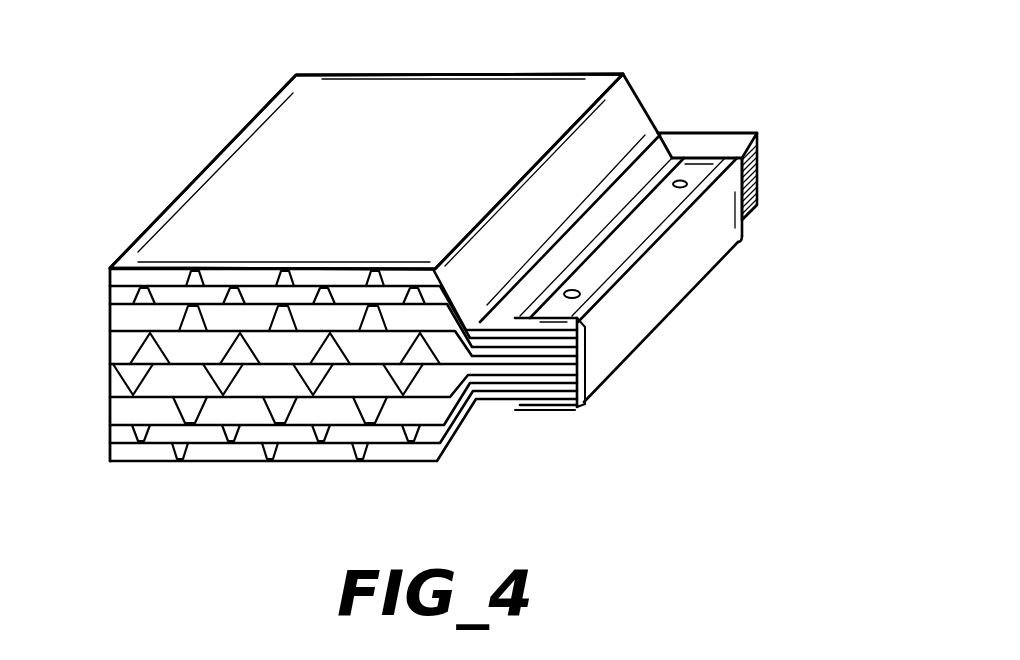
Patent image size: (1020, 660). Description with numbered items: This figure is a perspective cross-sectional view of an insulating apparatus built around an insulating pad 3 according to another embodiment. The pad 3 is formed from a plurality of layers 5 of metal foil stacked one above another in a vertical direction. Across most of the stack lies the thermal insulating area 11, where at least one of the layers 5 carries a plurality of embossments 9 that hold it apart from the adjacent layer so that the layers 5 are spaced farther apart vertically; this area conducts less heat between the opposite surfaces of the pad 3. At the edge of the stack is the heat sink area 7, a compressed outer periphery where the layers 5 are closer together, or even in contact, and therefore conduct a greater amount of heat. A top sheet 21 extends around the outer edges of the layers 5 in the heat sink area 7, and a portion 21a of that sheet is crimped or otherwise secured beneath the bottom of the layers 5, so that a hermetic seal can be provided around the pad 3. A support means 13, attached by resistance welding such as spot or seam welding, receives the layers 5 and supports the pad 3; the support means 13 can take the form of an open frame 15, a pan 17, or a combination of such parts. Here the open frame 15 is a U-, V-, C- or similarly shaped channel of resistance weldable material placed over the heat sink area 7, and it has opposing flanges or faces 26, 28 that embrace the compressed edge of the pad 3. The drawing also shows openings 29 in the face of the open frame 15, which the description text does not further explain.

The insulating pad 3 is at (451, 62).
The thermal insulating area 11 is at (323, 173).
The layers 5 is at (314, 336).
The embossments 9 is at (184, 312).
The pan 17 is at (452, 446).
The top sheet 21 is at (653, 264).
The portion 21a is at (573, 372).
The heat sink area 7 is at (772, 133).
The open frame 15 is at (695, 203).
The support means 13 is at (732, 275).
The holes 29 is at (679, 181).
The flange 26 is at (552, 340).
The flange 28 is at (550, 412).